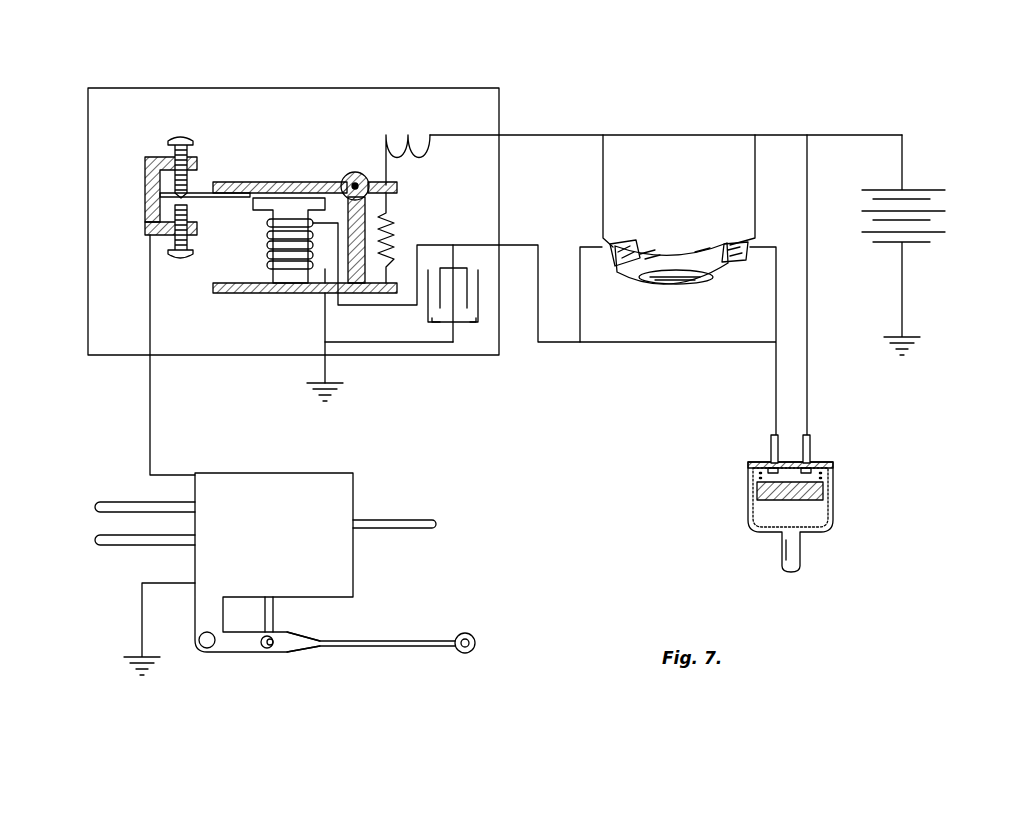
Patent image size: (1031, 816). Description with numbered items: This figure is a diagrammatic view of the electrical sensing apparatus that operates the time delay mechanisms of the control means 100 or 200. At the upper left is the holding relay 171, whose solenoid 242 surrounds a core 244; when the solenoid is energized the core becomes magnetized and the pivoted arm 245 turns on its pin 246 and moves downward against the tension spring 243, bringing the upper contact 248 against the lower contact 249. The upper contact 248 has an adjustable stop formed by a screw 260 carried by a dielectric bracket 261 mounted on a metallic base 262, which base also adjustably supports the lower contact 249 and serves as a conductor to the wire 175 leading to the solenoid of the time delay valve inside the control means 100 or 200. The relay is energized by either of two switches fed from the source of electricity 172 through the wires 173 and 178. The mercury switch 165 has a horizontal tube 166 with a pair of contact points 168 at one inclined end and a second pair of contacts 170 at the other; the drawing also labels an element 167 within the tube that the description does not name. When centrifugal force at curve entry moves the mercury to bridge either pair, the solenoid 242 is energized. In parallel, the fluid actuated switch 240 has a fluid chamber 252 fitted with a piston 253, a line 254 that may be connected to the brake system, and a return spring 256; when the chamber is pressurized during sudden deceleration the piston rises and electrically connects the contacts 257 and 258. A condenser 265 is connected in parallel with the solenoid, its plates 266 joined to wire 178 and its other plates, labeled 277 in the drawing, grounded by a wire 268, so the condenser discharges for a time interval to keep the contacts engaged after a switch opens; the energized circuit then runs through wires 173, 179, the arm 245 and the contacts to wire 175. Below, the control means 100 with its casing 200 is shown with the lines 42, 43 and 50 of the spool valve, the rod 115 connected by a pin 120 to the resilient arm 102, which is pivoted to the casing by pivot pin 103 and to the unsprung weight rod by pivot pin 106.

The holding relay 171 is at (286, 86).
The wire 179 is at (552, 135).
The wire 173 is at (778, 136).
The source of electricity 172 is at (925, 190).
The wire 178 is at (427, 245).
The mercury switch 165 is at (682, 251).
The horizontal tube 166 is at (688, 263).
The slot 167 is at (690, 282).
The pair of contact points 168 is at (615, 262).
The second pair of contacts 170 is at (730, 262).
The fluid actuated switch 240 is at (787, 491).
The fluid chamber 252 is at (763, 517).
The piston 253 is at (752, 492).
The line 254 is at (790, 552).
The return spring 256 is at (830, 478).
The contact 257 is at (770, 444).
The contact 258 is at (809, 445).
The dielectric bracket 261 is at (145, 162).
The lower contact 249 is at (175, 213).
The screw 260 is at (190, 138).
The metallic base 262 is at (178, 233).
The upper contact 248 is at (160, 195).
The pivoted arm 245 is at (233, 182).
The pin 246 is at (353, 183).
The core 244 is at (257, 290).
The solenoid 242 is at (270, 232).
The tension spring 243 is at (390, 225).
The plates 266 is at (467, 292).
The capacitor casing 277 is at (480, 324).
The condenser 265 is at (472, 328).
The wire 268 is at (372, 345).
The wire 175 is at (150, 428).
The control means 100 is at (292, 571).
The control means 200 is at (290, 472).
The line 42 is at (130, 503).
The line 43 is at (150, 540).
The line 50 is at (400, 523).
The rod 115 is at (275, 616).
The pivot pin 103 is at (204, 646).
The pin 120 is at (263, 647).
The resilient arm 102 is at (287, 649).
The pivot pin 106 is at (474, 640).